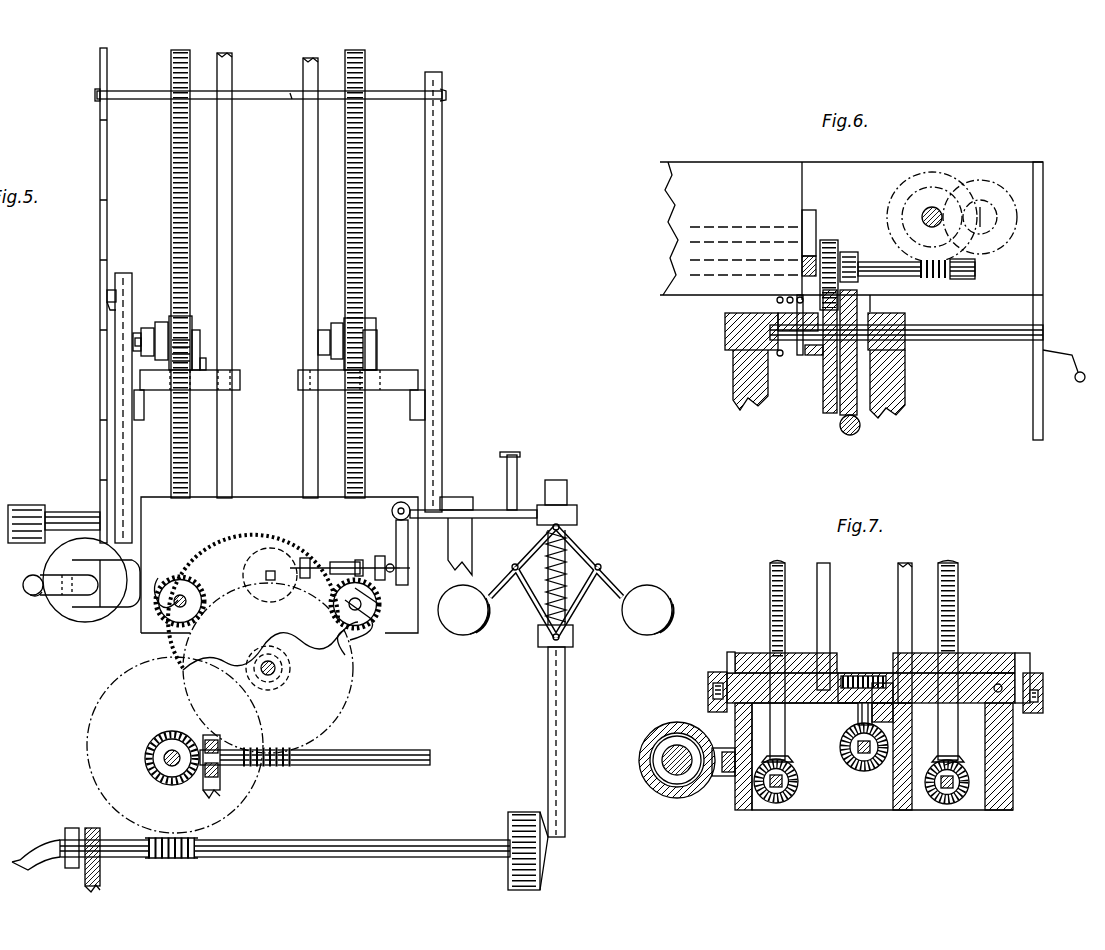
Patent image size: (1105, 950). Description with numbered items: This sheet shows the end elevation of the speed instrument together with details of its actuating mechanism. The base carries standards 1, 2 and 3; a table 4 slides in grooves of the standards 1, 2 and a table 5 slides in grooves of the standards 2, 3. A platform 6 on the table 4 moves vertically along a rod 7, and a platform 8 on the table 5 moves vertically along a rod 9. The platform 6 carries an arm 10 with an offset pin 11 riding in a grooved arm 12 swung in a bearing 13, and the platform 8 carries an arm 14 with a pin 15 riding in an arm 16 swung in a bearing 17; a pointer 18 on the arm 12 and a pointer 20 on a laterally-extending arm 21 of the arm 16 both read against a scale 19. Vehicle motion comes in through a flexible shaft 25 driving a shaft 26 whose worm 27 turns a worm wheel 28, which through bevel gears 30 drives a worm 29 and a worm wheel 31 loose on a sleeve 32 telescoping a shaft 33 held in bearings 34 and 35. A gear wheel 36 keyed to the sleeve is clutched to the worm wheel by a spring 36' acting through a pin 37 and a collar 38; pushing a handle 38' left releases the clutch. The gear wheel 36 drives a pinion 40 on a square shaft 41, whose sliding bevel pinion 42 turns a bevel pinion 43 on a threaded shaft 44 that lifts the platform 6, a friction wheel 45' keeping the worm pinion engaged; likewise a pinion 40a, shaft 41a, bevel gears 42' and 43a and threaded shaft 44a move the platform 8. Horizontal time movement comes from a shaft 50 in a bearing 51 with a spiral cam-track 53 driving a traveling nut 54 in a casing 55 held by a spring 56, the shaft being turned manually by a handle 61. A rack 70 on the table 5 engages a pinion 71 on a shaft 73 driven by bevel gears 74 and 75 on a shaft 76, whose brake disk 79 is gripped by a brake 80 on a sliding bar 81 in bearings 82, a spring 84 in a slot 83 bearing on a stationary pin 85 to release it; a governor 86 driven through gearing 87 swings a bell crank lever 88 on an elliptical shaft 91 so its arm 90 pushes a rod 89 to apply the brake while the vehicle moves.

In FIG. 7, the standard 1 is at (735, 805).
In FIG. 7, the standard 2 is at (905, 812).
In FIG. 7, the standard 3 is at (1013, 785).
In FIG. 7, the table 4 is at (748, 672).
In FIG. 7, the table 5 is at (990, 672).
In FIG. 5, the platform 6 is at (240, 378).
In FIG. 7, the platform 6 is at (752, 652).
In FIG. 5, the rod 7 is at (232, 348).
In FIG. 7, the rod 7 is at (834, 626).
In FIG. 5, the platform 8 is at (298, 390).
In FIG. 7, the platform 8 is at (972, 652).
In FIG. 5, the rod 9 is at (303, 238).
In FIG. 7, the rod 9 is at (898, 575).
In FIG. 7, the arm 10 is at (727, 662).
In FIG. 7, the offset pin 11 is at (708, 685).
In FIG. 5, the arm 12 is at (120, 418).
In FIG. 7, the arm 12 is at (712, 702).
In FIG. 5, the bearing 13 is at (35, 504).
In FIG. 7, the arm 14 is at (1025, 660).
In FIG. 7, the pin 15 is at (1043, 678).
In FIG. 5, the arm 16 is at (442, 288).
In FIG. 7, the arm 16 is at (1043, 706).
In FIG. 5, the bearing 17 is at (447, 505).
In FIG. 5, the pointer 18 is at (105, 296).
In FIG. 5, the scale 19 is at (107, 152).
In FIG. 5, the pointer 20 is at (96, 95).
In FIG. 5, the laterally-extending arm 21 is at (292, 93).
In FIG. 5, the flexible shaft 25 is at (45, 838).
In FIG. 5, the shaft 26 is at (262, 840).
In FIG. 5, the worm 27 is at (180, 860).
In FIG. 5, the worm wheel 28 is at (88, 745).
In FIG. 5, the worm 29 is at (290, 768).
In FIG. 6, the worm 29 is at (850, 436).
In FIG. 5, the bevel gears 30 is at (170, 785).
In FIG. 5, the worm wheel 31 is at (340, 730).
In FIG. 6, the worm wheel 31 is at (858, 385).
In FIG. 6, the sleeve 32 is at (870, 312).
In FIG. 6, the shaft 33 is at (975, 341).
In FIG. 6, the bearing 34 is at (755, 405).
In FIG. 6, the bearing 35 is at (900, 410).
In FIG. 5, the gear wheel 36 is at (279, 593).
In FIG. 6, the gear wheel 36 is at (821, 367).
In FIG. 6, the spring 36' is at (789, 346).
In FIG. 6, the pin 37 is at (808, 358).
In FIG. 6, the collar 38 is at (791, 304).
In FIG. 6, the handle 38' is at (1060, 301).
In FIG. 5, the pinion 40 is at (172, 607).
In FIG. 6, the pinion 40 is at (832, 242).
In FIG. 5, the pinion 40a is at (360, 632).
In FIG. 5, the shaft 41 is at (163, 580).
In FIG. 6, the shaft 41 is at (868, 262).
In FIG. 7, the shaft 41 is at (790, 790).
In FIG. 5, the shaft 41a is at (352, 612).
In FIG. 7, the shaft 41a is at (962, 788).
In FIG. 7, the bevel pinion 42 is at (776, 799).
In FIG. 7, the bevel gear 42' is at (957, 801).
In FIG. 7, the bevel pinion 43 is at (840, 748).
In FIG. 7, the bevel gear 43a is at (975, 750).
In FIG. 5, the threaded shaft 44 is at (171, 232).
In FIG. 7, the threaded shaft 44 is at (797, 545).
In FIG. 5, the threaded shaft 44a is at (365, 250).
In FIG. 7, the threaded shaft 44a is at (958, 568).
In FIG. 5, the friction wheel 45' is at (202, 331).
In FIG. 7, the shaft 50 is at (662, 770).
In FIG. 5, the bearing 51 is at (108, 598).
In FIG. 6, the spiral cam-track 53 is at (945, 178).
In FIG. 7, the traveling nut 54 is at (655, 760).
In FIG. 5, the casing 55 is at (70, 615).
In FIG. 7, the casing 55 is at (680, 798).
In FIG. 7, the spring 56 is at (650, 737).
In FIG. 5, the handle 61 is at (30, 592).
In FIG. 7, the rack 70 is at (887, 652).
In FIG. 7, the pinion 71 is at (858, 672).
In FIG. 7, the shaft 73 is at (858, 710).
In FIG. 7, the bevel gear 74 is at (858, 740).
In FIG. 7, the bevel gear 75 is at (866, 760).
In FIG. 5, the shaft 76 is at (272, 570).
In FIG. 7, the shaft 76 is at (855, 760).
In FIG. 5, the brake disk 79 is at (262, 549).
In FIG. 6, the brake disk 79 is at (812, 220).
In FIG. 5, the brake 80 is at (306, 565).
In FIG. 5, the bar 81 is at (345, 555).
In FIG. 5, the bearings 82 is at (345, 555).
In FIG. 5, the slot 83 is at (331, 620).
In FIG. 5, the spring 84 is at (386, 548).
In FIG. 5, the stationary pin 85 is at (382, 605).
In FIG. 5, the governor 86 is at (600, 565).
In FIG. 5, the gearing 87 is at (522, 812).
In FIG. 5, the bell crank lever 88 is at (458, 510).
In FIG. 5, the rod 89 is at (457, 608).
In FIG. 5, the arm 90 is at (410, 568).
In FIG. 5, the shaft 91 is at (404, 503).
In FIG. 7, the shaft 91 is at (1000, 683).